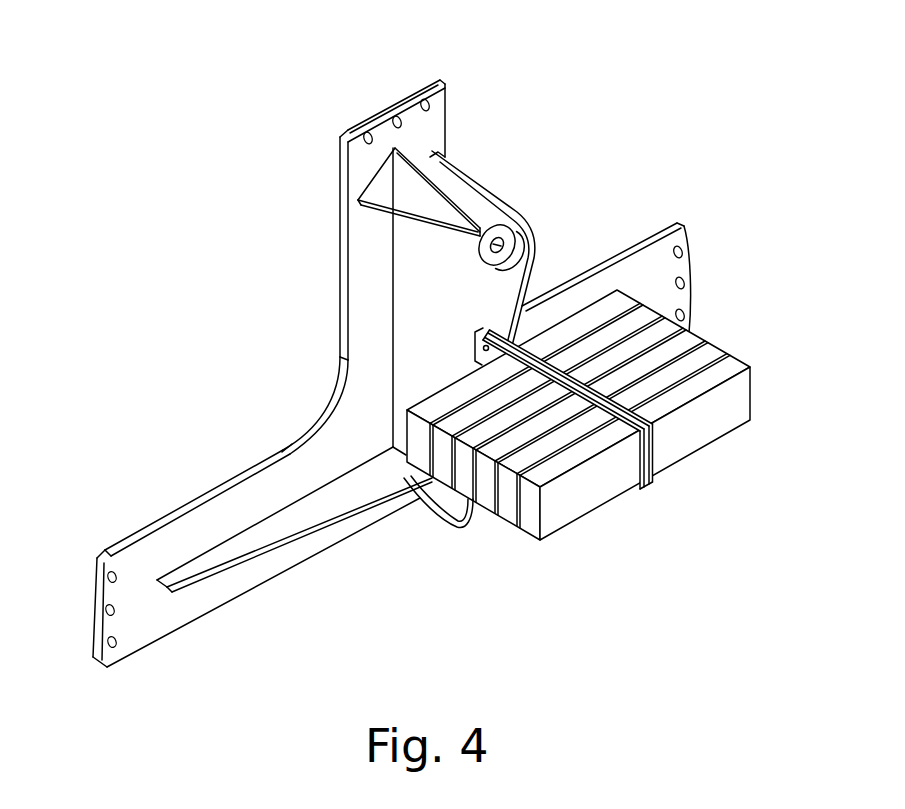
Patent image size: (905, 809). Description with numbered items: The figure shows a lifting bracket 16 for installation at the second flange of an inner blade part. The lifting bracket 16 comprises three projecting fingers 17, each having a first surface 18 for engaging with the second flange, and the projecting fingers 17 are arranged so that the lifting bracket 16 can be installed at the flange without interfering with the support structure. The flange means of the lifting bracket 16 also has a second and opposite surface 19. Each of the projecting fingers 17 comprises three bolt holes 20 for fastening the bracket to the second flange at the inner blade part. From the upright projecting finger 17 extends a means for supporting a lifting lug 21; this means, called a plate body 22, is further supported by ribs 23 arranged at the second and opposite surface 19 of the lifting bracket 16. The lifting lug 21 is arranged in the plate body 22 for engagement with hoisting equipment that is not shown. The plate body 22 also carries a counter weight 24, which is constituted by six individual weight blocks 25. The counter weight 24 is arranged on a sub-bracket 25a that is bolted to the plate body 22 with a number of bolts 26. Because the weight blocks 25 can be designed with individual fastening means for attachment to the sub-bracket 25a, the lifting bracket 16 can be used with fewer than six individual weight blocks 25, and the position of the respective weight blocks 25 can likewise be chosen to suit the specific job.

The lifting bracket 16 is at (437, 363).
The projecting fingers 17 is at (593, 285).
The first surface 18 is at (388, 104).
The second and opposite surface 19 is at (373, 442).
The bolt holes 20 is at (678, 247).
The lifting lug 21 is at (489, 244).
The plate body 22 is at (457, 339).
The ribs 23 is at (391, 196).
The counter weight 24 is at (601, 534).
The individual weight blocks 25 is at (733, 367).
The sub-bracket 25a is at (655, 478).
The bolts 26 is at (486, 349).